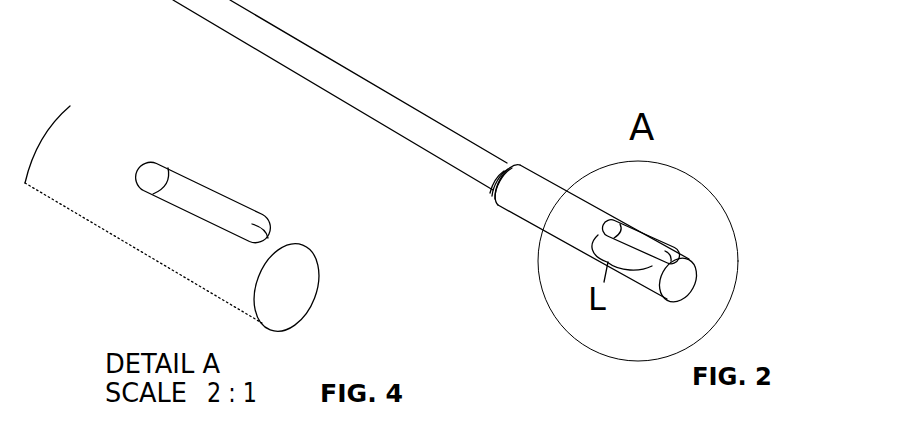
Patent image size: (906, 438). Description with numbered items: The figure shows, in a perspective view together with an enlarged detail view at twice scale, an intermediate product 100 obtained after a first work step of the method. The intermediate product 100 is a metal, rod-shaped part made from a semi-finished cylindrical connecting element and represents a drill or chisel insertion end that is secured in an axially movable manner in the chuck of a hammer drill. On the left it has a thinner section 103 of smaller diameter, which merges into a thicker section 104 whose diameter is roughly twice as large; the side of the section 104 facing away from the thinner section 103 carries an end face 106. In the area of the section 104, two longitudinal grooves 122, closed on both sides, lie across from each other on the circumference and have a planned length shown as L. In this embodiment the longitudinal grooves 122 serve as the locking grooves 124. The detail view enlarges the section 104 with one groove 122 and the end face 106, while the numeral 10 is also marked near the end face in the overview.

In FIG. 2, the tube end face 10 is at (679, 276).
In FIG. 4, the intermediate product 100 is at (127, 128).
In FIG. 2, the intermediate product 100 is at (544, 165).
In FIG. 2, the section having a smaller diameter 103 is at (420, 112).
In FIG. 4, the section 104 is at (187, 251).
In FIG. 2, the section 104 is at (537, 198).
In FIG. 4, the end face 106 is at (288, 278).
In FIG. 4, the longitudinal grooves closed on both sides 122 is at (208, 210).
In FIG. 2, the longitudinal grooves closed on both sides 122 is at (634, 240).
In FIG. 4, the locking grooves 124 is at (232, 225).
In FIG. 2, the locking grooves 124 is at (651, 247).